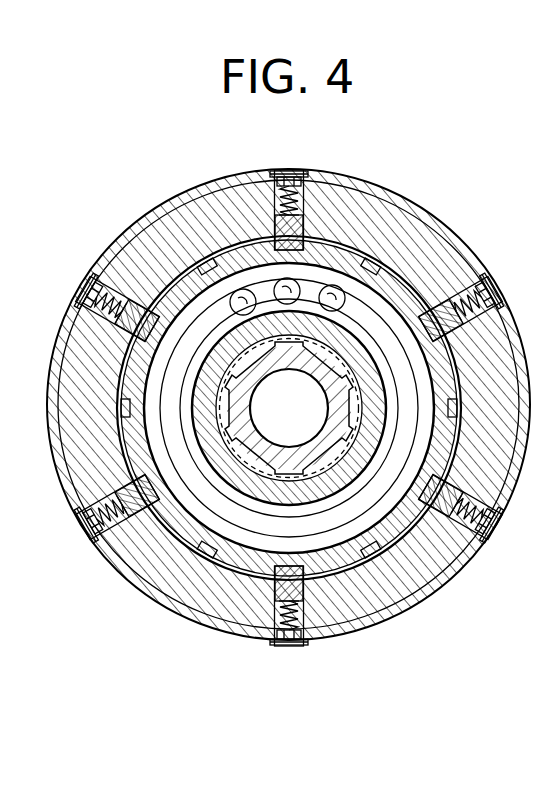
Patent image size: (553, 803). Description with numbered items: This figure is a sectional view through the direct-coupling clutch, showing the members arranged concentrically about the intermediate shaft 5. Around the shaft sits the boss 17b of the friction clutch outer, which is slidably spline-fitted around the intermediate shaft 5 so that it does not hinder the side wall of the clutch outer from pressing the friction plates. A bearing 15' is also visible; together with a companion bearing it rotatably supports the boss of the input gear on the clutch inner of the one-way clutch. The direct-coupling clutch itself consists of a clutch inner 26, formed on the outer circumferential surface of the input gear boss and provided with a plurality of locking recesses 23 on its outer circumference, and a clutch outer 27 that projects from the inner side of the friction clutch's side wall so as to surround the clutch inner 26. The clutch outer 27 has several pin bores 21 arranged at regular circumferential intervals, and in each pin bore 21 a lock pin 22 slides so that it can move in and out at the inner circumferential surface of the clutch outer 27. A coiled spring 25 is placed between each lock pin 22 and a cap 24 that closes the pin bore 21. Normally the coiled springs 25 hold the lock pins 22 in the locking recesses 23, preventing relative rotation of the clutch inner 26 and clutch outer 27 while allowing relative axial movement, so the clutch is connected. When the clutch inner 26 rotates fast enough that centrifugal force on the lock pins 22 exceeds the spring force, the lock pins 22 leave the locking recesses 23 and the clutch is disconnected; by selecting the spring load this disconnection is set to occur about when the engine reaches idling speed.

The intermediate shaft 5 is at (243, 428).
The boss 17b is at (290, 479).
The bearing 15' is at (289, 374).
The pin bore 21 is at (449, 493).
The lock pin 22 is at (446, 503).
The locking recess 23 is at (448, 332).
The cap 24 is at (497, 300).
The coiled spring 25 is at (470, 292).
The clutch inner 26 is at (322, 567).
The clutch outer 27 is at (421, 587).